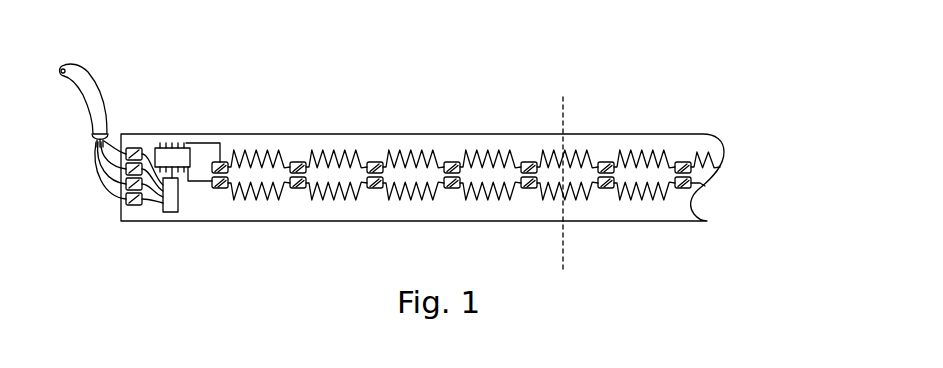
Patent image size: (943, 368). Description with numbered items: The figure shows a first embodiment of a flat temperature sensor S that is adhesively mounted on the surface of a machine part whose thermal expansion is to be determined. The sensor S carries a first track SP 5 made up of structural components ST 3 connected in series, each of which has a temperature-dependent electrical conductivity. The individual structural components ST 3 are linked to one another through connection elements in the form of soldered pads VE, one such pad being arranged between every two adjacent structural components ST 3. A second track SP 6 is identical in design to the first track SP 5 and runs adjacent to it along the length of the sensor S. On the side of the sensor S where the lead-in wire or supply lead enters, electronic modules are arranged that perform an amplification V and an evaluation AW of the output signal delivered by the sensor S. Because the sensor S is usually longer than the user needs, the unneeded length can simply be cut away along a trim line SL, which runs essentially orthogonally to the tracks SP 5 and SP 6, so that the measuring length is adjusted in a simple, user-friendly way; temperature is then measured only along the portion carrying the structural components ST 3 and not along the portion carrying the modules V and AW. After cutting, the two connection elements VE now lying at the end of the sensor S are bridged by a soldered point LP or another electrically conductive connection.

The flat temperature sensor S is at (434, 76).
The amplification module V is at (170, 148).
The evaluation module AW is at (169, 213).
The structural component ST 3 is at (263, 152).
The connection element (soldered pad) VE is at (373, 162).
The soldered point LP is at (526, 162).
The trim line SL is at (562, 170).
The first track SP 5 is at (738, 158).
The second track SP 6 is at (738, 202).